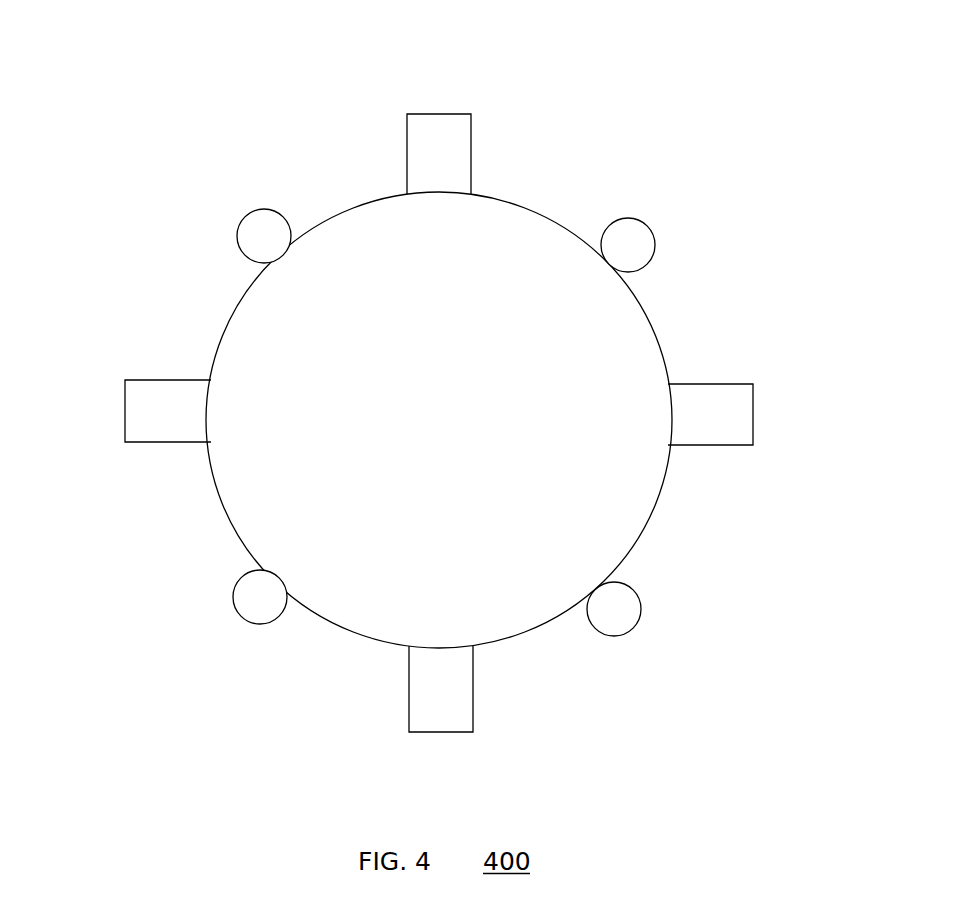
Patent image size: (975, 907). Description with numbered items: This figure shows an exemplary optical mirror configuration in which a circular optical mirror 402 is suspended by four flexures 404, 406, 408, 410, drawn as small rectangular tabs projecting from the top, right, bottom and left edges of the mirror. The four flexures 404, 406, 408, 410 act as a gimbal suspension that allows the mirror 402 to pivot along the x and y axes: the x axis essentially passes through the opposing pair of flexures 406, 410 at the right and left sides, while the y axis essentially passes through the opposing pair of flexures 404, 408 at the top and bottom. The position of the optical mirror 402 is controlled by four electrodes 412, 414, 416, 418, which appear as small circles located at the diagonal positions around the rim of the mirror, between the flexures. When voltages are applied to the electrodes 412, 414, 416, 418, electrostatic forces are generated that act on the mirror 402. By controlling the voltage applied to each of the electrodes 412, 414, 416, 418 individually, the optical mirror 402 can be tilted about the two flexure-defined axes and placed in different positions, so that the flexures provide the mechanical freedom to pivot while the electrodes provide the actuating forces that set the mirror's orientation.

The optical mirror 402 is at (215, 504).
The flexure 404 is at (440, 100).
The flexure 406 is at (762, 412).
The flexure 408 is at (442, 745).
The flexure 410 is at (118, 410).
The electrode 412 is at (648, 218).
The electrode 414 is at (643, 637).
The electrode 416 is at (230, 612).
The electrode 418 is at (240, 208).